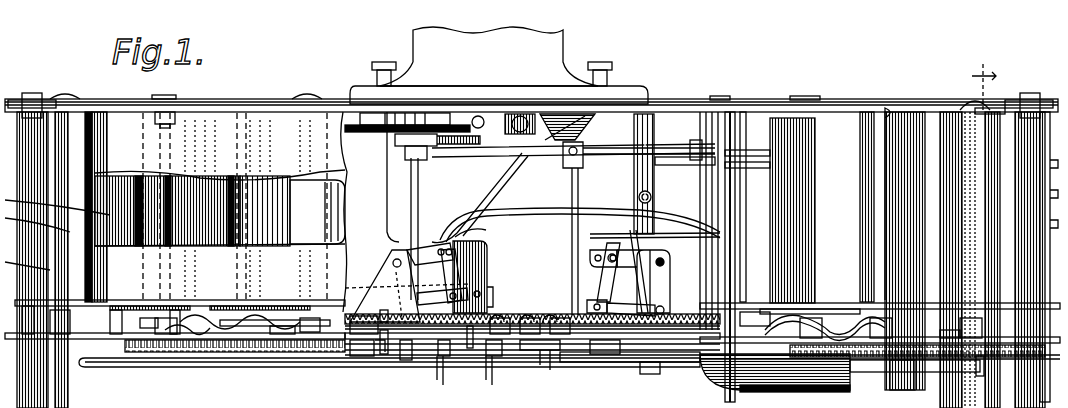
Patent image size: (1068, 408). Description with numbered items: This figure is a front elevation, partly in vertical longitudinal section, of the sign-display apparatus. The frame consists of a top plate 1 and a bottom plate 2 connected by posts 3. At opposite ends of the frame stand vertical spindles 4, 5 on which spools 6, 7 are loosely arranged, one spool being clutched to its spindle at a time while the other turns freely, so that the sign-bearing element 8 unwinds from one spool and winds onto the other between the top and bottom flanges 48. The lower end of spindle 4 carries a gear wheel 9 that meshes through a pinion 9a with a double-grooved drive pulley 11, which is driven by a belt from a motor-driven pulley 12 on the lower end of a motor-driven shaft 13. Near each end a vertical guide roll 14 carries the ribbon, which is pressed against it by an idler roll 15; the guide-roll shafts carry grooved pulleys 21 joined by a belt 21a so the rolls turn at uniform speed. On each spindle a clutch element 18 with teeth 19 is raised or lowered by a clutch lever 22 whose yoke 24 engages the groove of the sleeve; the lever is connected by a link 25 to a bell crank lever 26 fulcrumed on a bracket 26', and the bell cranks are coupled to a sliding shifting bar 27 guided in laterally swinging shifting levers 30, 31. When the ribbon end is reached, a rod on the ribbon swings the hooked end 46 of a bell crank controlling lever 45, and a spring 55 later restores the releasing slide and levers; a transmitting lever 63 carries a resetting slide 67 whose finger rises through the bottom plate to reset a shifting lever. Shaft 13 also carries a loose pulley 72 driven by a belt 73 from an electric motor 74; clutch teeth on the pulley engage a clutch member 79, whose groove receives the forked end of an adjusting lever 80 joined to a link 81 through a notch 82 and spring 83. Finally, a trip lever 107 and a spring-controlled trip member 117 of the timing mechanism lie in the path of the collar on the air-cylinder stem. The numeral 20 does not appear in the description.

The top plate 1 is at (258, 105).
The bottom plate 2 is at (12, 340).
The posts 3 is at (170, 190).
The vertical spindle 4 is at (55, 250).
The vertical spindle 5 is at (984, 80).
The spool 6 is at (206, 105).
The spool 7 is at (856, 108).
The sign-bearing element 8 is at (288, 182).
The gear wheel 9 is at (250, 330).
The pinion 9a is at (318, 336).
The drive pulley 11 is at (282, 338).
The motor-driven pulley 12 is at (410, 362).
The motor-driven shaft 13 is at (420, 200).
The vertical guide roll 14 is at (926, 226).
The idler roll 15 is at (995, 108).
The clutch element 18 is at (182, 340).
The teeth 19 is at (165, 345).
The gear 20 is at (760, 370).
The grooved pulley 21 is at (108, 368).
The belt 21a is at (380, 340).
The clutch lever 22 is at (362, 358).
The yoke 24 is at (205, 335).
The link 25 is at (490, 274).
The bell crank lever 26 is at (440, 281).
The bracket 26' is at (646, 278).
The sliding shifting bar 27 is at (456, 358).
The shifting lever 30 is at (508, 350).
The shifting lever 31 is at (548, 352).
The bell crank controlling lever 45 is at (265, 328).
The hooked end 46 is at (145, 322).
The flanges 48 is at (795, 308).
The spring 55 is at (567, 313).
The transmitting lever 63 is at (672, 375).
The resetting slide 67 is at (605, 356).
The loose pulley 72 is at (432, 128).
The belt 73 is at (490, 135).
The electric motor 74 is at (565, 30).
The clutch member 79 is at (430, 158).
The adjusting lever 80 is at (542, 156).
The link 81 is at (706, 203).
The notch 82 is at (708, 165).
The spring 83 is at (672, 160).
The trip lever 107 is at (660, 280).
The trip member 117 is at (626, 236).